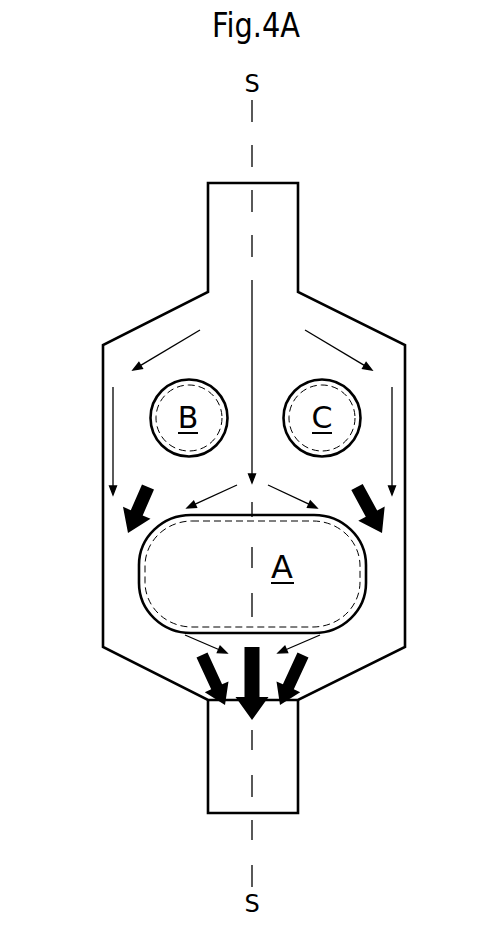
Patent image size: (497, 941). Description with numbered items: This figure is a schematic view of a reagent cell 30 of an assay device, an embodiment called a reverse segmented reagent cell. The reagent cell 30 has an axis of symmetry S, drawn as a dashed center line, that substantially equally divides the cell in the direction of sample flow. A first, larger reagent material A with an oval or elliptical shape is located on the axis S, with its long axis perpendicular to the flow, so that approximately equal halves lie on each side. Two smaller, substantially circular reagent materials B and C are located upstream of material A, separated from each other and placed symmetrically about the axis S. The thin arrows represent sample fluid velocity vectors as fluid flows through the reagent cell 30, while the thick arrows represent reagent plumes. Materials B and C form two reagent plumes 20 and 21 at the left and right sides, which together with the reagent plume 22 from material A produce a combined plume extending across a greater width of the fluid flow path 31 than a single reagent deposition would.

The reagent plume 20 is at (125, 528).
The reagent plume 21 is at (385, 523).
The reagent plume 22 is at (262, 710).
The reagent cell 30 is at (363, 313).
The fluid flow path 31 is at (215, 755).